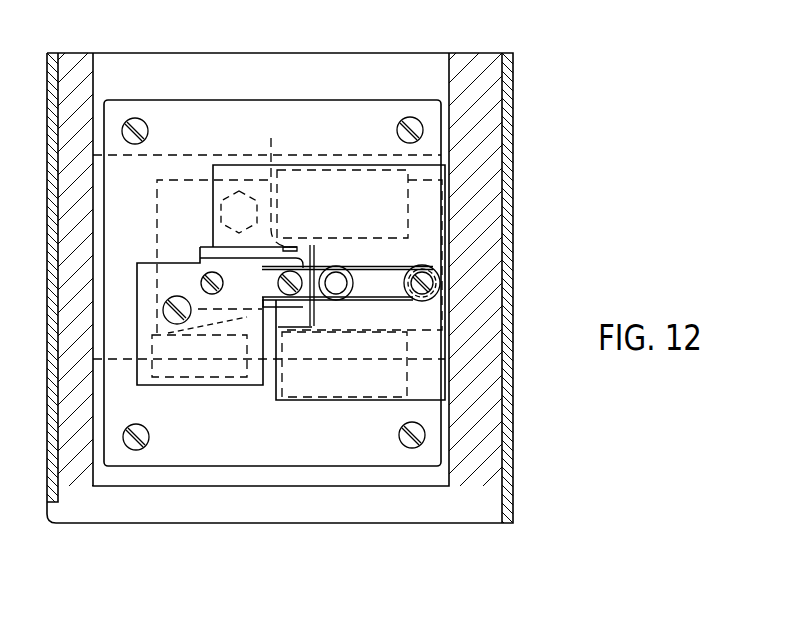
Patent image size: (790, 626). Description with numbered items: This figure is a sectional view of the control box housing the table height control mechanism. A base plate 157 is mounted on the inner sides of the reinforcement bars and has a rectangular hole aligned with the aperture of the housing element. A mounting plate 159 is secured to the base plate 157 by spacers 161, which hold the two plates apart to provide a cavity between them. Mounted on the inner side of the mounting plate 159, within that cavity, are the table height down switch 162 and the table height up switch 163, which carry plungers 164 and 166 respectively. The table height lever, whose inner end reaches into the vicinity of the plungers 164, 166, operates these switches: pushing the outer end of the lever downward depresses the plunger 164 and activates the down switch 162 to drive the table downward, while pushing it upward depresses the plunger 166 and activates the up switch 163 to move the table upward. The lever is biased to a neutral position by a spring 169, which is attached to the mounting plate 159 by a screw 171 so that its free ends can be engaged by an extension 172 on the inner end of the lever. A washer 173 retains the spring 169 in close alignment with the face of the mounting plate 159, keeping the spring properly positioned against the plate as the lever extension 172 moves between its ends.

The base plate 157 is at (345, 455).
The mounting plate 159 is at (238, 203).
The spacers 161 is at (238, 203).
The table height down switch 162 is at (408, 204).
The table height up switch 163 is at (293, 390).
The plunger 164 is at (282, 182).
The plunger 166 is at (263, 333).
The spring 169 is at (395, 300).
The screw 171 is at (440, 283).
The extension 172 is at (277, 283).
The washer 173 is at (338, 300).